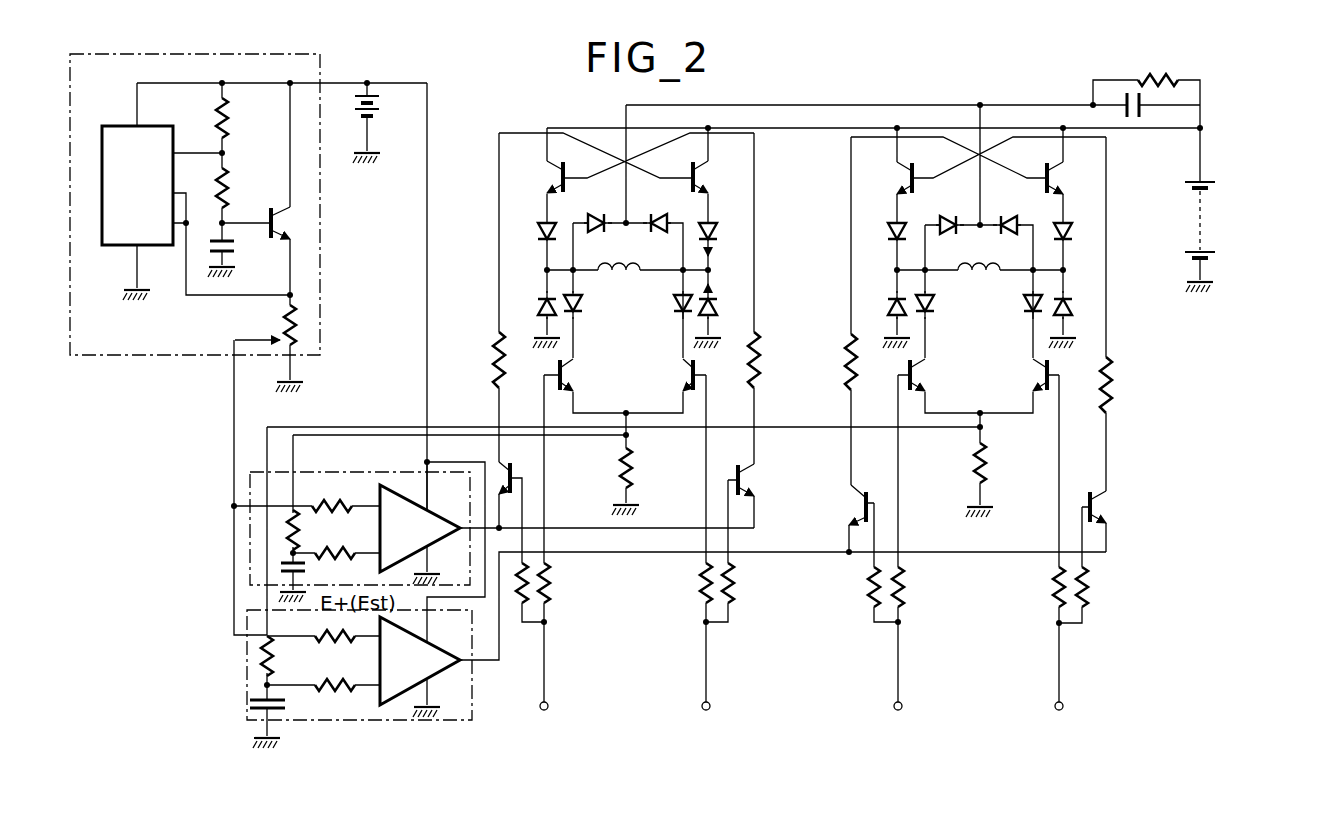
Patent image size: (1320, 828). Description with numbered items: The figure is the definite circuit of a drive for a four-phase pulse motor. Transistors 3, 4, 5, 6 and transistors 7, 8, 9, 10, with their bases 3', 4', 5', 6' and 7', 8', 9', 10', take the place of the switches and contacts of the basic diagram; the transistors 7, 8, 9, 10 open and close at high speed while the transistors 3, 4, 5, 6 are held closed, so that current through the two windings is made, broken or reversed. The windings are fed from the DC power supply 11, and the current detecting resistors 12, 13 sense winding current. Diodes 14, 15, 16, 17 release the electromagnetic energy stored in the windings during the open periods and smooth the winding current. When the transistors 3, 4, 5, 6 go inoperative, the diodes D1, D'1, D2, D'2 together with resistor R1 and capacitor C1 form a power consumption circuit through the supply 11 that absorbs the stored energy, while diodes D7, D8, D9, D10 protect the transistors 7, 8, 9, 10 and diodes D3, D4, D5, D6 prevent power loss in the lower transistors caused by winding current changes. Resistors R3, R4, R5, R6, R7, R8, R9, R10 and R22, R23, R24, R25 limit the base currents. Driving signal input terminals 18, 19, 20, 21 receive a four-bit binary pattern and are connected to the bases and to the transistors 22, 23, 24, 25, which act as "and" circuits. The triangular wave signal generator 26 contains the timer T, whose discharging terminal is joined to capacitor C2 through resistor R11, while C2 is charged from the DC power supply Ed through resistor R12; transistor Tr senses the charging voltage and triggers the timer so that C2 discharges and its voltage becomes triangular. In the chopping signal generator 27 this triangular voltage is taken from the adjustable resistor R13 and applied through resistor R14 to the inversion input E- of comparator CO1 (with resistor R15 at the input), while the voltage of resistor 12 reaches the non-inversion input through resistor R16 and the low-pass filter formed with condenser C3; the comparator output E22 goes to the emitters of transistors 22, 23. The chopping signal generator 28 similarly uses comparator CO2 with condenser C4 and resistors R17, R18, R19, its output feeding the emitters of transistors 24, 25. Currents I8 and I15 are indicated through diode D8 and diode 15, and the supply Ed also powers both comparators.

The transistor 3 is at (573, 376).
The transistor 4 is at (678, 375).
The transistor 5 is at (925, 375).
The transistor 6 is at (1029, 375).
The transistor 7 is at (547, 178).
The transistor 8 is at (708, 179).
The transistor 9 is at (894, 178).
The transistor 10 is at (1067, 178).
The base of transistor 3' is at (532, 370).
The base of transistor 4' is at (715, 362).
The base of transistor 5' is at (883, 373).
The base of transistor 6' is at (1080, 368).
The base of transistor 7' is at (579, 161).
The base of transistor 8' is at (672, 163).
The base of transistor 9' is at (926, 160).
The base of transistor 10' is at (1022, 162).
The DC power supply 11 is at (1213, 210).
The current detecting resistor 12 is at (636, 481).
The current detecting resistor 13 is at (989, 480).
The diode 14 is at (532, 316).
The diode 15 is at (720, 319).
The diode 16 is at (885, 318).
The diode 17 is at (1073, 316).
The driving signal input terminal 18 is at (556, 708).
The driving signal input terminal 19 is at (718, 708).
The driving signal input terminal 20 is at (910, 708).
The driving signal input terminal 21 is at (1072, 708).
The transistor 22 is at (517, 468).
The transistor 23 is at (758, 482).
The transistor 24 is at (845, 505).
The transistor 25 is at (1112, 507).
The triangular wave signal generator 26 is at (161, 356).
The chopping signal generator 27 is at (247, 487).
The chopping signal generator 28 is at (336, 722).
The resistor R1 is at (1158, 66).
The capacitor C1 is at (1150, 113).
The base current limiting resistor R3 is at (559, 583).
The base current limiting resistor R4 is at (684, 583).
The base current limiting resistor R5 is at (913, 585).
The base current limiting resistor R6 is at (1040, 585).
The base current limiting resistor R7 is at (770, 360).
The base current limiting resistor R8 is at (479, 360).
The base current limiting resistor R9 is at (1123, 385).
The base current limiting resistor R10 is at (832, 362).
The resistor R11 is at (243, 188).
The resistor R12 is at (243, 118).
The proportionally adjustable resistor R13 is at (264, 325).
The resistor R14 is at (331, 495).
The resistor R15 is at (315, 530).
The resistor R16 is at (340, 567).
The resistor R17 is at (334, 651).
The resistor R18 is at (262, 658).
The resistor R19 is at (338, 702).
The base current limiting resistor R22 is at (520, 606).
The base current limiting resistor R23 is at (749, 583).
The base current limiting resistor R24 is at (849, 586).
The base current limiting resistor R25 is at (1104, 585).
The capacitor C2 is at (238, 258).
The condenser C3 is at (268, 563).
The condenser C4 is at (249, 703).
The diode D1 is at (596, 212).
The diode D'1 is at (658, 213).
The diode D2 is at (948, 214).
The diode D'2 is at (1013, 215).
The diode D3 is at (586, 314).
The diode D4 is at (671, 314).
The diode D5 is at (941, 305).
The diode D6 is at (1017, 320).
The diode D7 is at (530, 228).
The diode D8 is at (723, 225).
The diode D9 is at (883, 228).
The diode D10 is at (1081, 225).
The comparator CO1 is at (420, 534).
The comparator CO2 is at (420, 667).
The transistor Tr is at (288, 223).
The timer T is at (120, 247).
The DC power supply Ed is at (380, 129).
The voltage at output of comparator CO1 E22 is at (463, 522).
The inverting input voltage E- is at (364, 503).
The current through diode D8 I8 is at (743, 255).
The current through diode 15 I15 is at (754, 290).